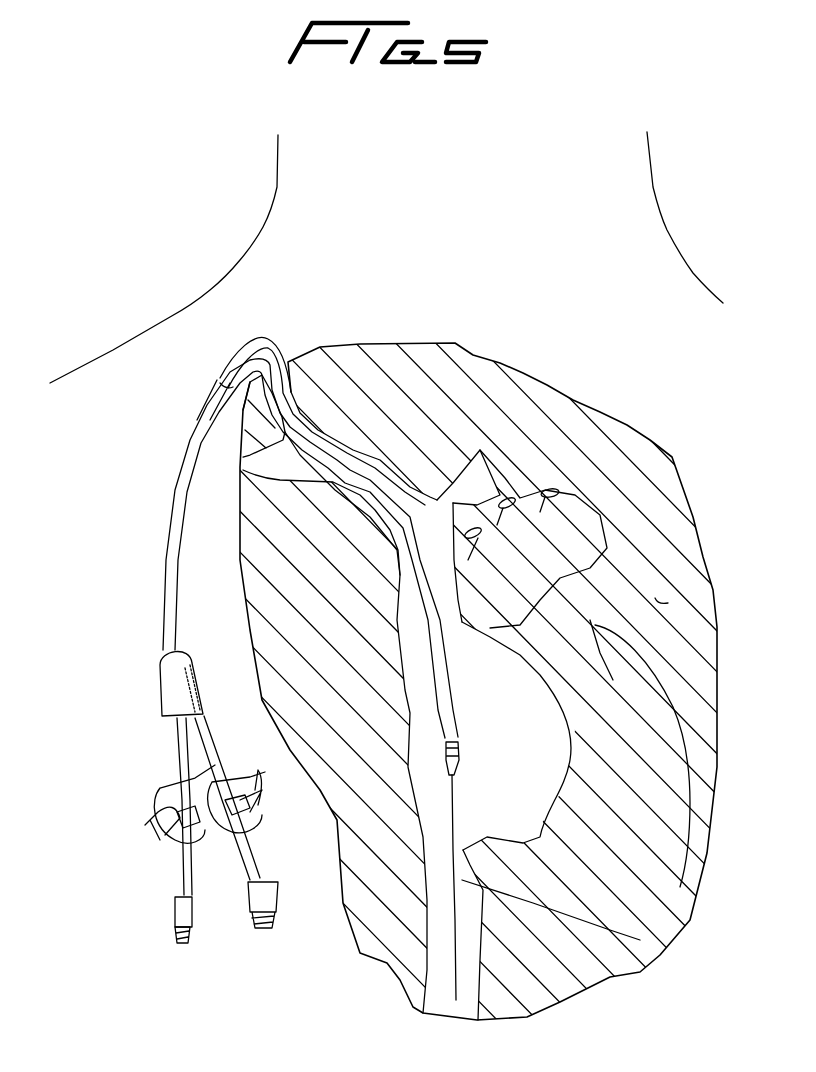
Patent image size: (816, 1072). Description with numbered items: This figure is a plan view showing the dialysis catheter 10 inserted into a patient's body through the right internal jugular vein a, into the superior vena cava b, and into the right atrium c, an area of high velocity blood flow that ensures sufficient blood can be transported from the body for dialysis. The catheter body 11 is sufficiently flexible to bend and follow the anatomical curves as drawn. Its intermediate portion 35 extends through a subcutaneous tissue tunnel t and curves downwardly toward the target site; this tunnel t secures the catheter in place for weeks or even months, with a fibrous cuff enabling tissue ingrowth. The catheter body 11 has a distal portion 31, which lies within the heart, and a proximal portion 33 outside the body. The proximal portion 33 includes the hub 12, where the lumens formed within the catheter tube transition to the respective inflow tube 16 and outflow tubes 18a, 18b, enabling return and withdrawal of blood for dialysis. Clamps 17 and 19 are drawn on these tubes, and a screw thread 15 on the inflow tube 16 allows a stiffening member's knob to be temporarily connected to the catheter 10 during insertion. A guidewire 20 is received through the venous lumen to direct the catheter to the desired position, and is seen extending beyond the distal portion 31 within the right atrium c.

The catheter 10 is at (324, 684).
The catheter body 11 is at (175, 500).
The hub 12 is at (175, 692).
The screw thread 15 is at (180, 945).
The inflow tube 16 is at (181, 880).
The clamp 17 is at (150, 825).
The outflow tube 18a is at (258, 867).
The outflow tube 18b is at (245, 860).
The clamp 19 is at (262, 815).
The guidewire 20 is at (437, 975).
The distal portion 31 is at (512, 718).
The proximal portion 33 is at (196, 846).
The intermediate portion 35 is at (222, 328).
The right internal jugular vein a is at (295, 395).
The superior vena cava b is at (443, 546).
The right atrium c is at (527, 771).
The subcutaneous tissue tunnel t is at (205, 410).